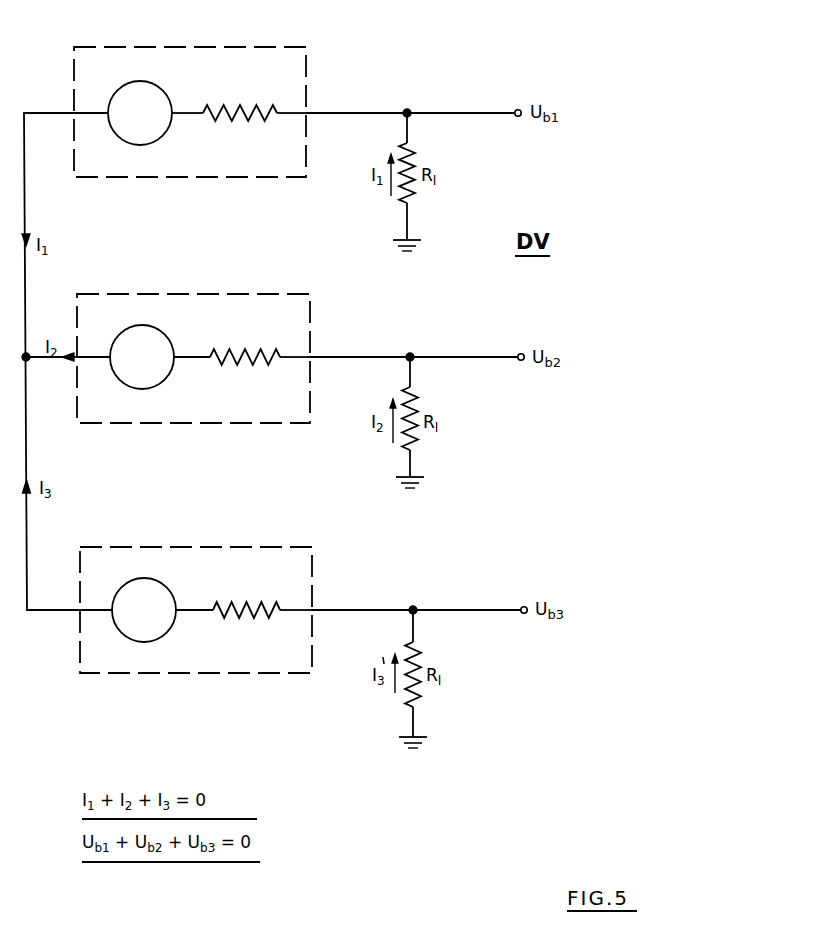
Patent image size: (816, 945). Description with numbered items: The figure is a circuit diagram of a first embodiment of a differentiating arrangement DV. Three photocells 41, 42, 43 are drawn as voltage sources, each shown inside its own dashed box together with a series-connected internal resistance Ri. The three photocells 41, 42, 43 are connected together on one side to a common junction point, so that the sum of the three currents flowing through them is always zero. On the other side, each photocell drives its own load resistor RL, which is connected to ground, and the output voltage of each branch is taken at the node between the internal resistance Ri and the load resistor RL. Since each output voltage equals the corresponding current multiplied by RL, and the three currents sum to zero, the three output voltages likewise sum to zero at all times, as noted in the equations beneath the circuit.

The photocell 41 is at (259, 164).
The photocell 42 is at (258, 413).
The photocell 43 is at (261, 658).